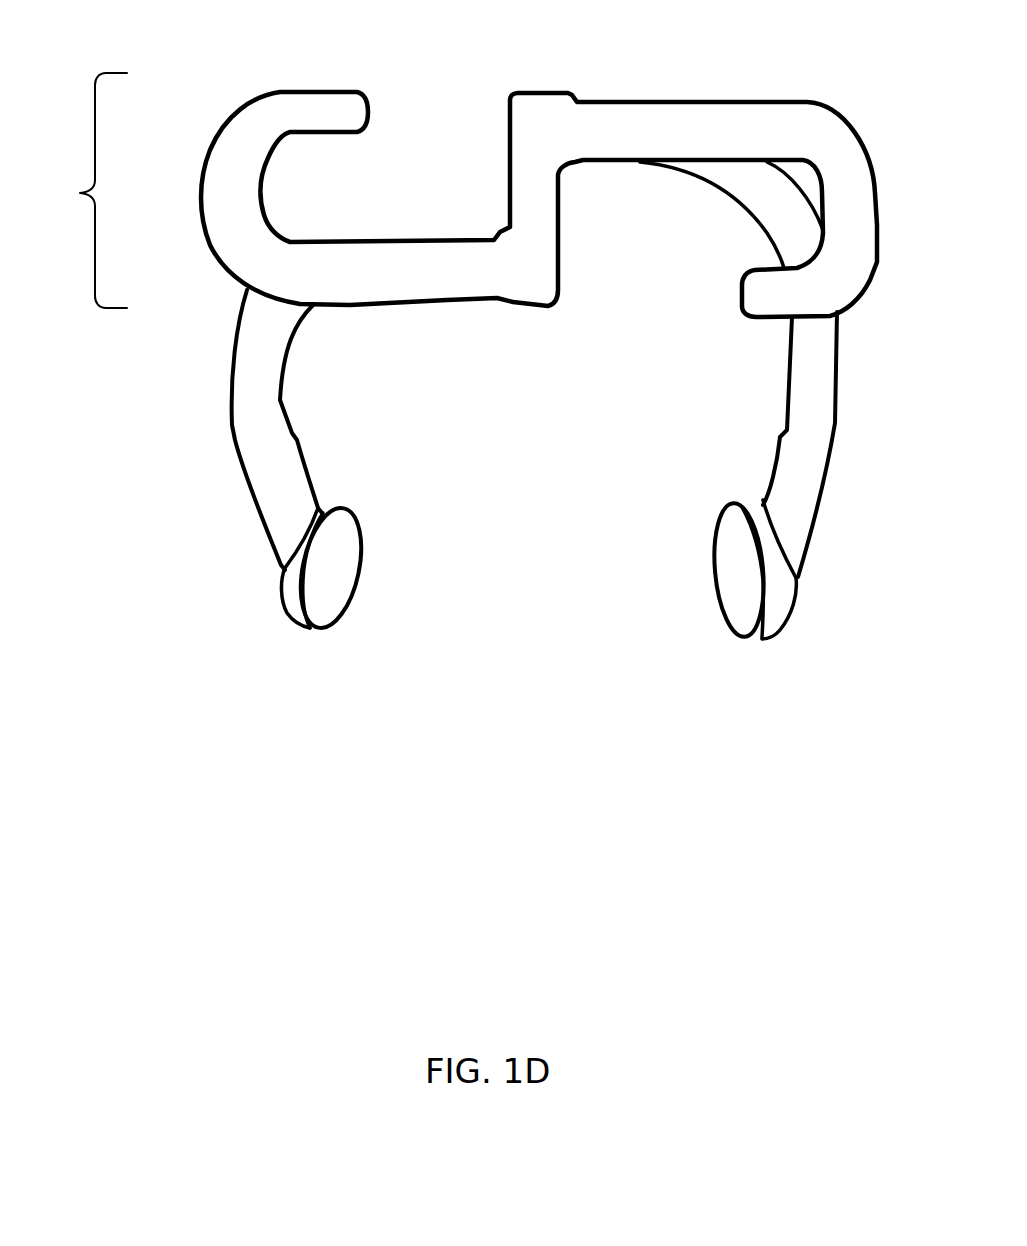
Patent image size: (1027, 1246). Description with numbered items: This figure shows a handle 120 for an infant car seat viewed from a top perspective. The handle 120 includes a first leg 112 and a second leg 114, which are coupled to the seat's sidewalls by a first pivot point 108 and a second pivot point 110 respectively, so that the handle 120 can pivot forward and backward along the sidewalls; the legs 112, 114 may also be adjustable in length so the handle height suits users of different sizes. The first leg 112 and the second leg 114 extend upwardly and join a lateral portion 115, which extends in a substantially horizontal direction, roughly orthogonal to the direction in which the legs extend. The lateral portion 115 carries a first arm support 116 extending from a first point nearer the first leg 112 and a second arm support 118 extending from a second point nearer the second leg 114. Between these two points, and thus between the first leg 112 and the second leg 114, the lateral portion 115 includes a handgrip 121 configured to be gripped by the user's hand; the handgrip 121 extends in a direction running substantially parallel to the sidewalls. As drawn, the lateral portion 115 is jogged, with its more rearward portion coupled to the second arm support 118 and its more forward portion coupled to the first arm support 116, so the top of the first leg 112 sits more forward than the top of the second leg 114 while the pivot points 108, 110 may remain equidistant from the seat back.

The first pivot point 108 is at (281, 598).
The second pivot point 110 is at (797, 604).
The first leg 112 is at (240, 444).
The second leg 114 is at (838, 425).
The lateral portion 115 is at (76, 190).
The first arm support 116 is at (214, 159).
The second arm support 118 is at (856, 141).
The handle 120 is at (757, 978).
The handgrip 121 is at (508, 178).